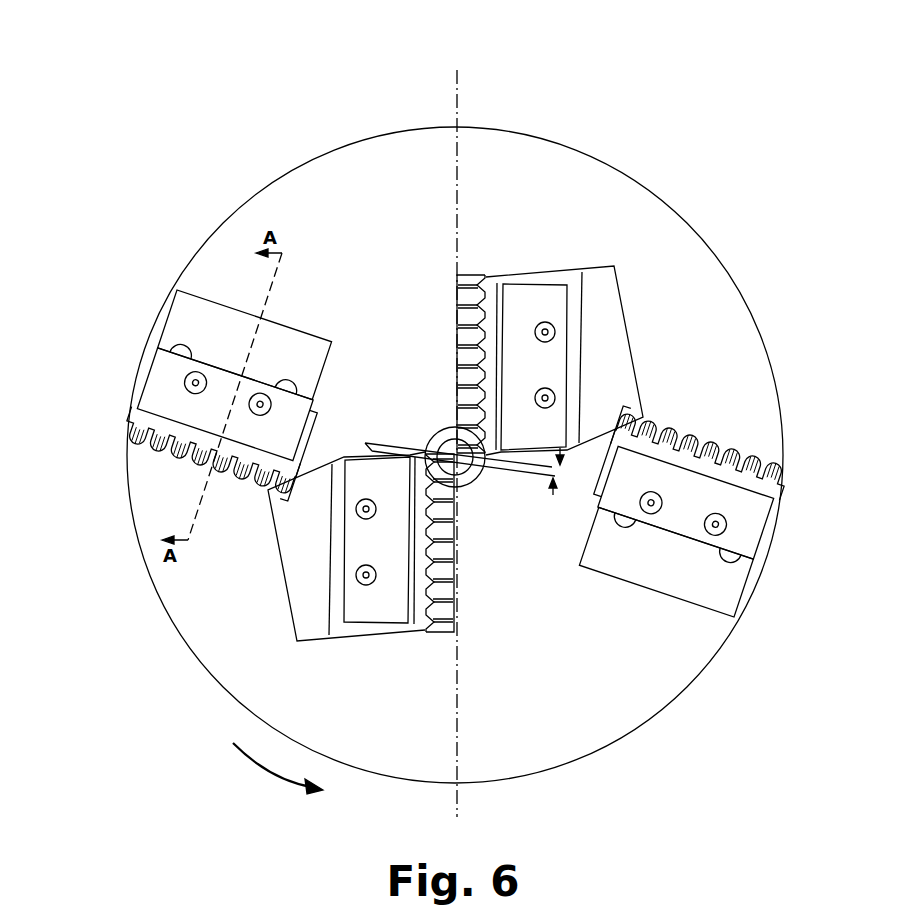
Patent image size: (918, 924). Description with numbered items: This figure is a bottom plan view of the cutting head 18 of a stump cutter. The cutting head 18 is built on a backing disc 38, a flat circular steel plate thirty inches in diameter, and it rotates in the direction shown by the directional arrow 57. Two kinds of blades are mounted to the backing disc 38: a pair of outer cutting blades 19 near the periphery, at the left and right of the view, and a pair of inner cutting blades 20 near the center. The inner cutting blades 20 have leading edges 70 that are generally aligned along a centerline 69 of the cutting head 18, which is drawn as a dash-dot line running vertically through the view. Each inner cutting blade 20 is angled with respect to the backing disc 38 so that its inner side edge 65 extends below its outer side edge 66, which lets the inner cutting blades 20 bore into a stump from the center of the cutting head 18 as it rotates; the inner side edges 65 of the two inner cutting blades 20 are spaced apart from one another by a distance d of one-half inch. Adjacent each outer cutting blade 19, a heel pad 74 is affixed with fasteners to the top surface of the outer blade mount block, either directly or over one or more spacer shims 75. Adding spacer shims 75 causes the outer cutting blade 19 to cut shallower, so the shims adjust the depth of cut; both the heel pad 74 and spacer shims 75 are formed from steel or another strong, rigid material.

The cutting head 18 is at (693, 148).
The outer cutting blade 19 is at (128, 437).
The inner cutting blade 20 is at (476, 278).
The backing disc 38 is at (592, 209).
The directional arrow 57 is at (265, 768).
The inner side edge 65 is at (442, 443).
The outer side edge 66 is at (460, 275).
The centerline 69 is at (457, 88).
The leading edge 70 is at (458, 350).
The heel pad 74 is at (527, 380).
The spacer shim 75 is at (219, 354).